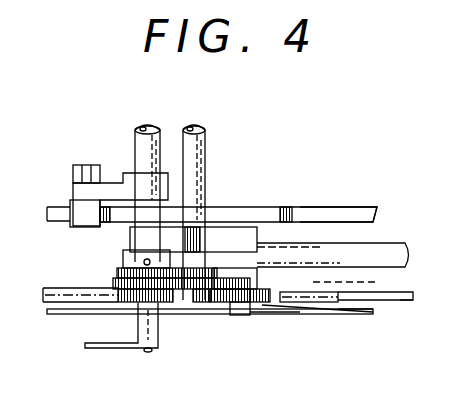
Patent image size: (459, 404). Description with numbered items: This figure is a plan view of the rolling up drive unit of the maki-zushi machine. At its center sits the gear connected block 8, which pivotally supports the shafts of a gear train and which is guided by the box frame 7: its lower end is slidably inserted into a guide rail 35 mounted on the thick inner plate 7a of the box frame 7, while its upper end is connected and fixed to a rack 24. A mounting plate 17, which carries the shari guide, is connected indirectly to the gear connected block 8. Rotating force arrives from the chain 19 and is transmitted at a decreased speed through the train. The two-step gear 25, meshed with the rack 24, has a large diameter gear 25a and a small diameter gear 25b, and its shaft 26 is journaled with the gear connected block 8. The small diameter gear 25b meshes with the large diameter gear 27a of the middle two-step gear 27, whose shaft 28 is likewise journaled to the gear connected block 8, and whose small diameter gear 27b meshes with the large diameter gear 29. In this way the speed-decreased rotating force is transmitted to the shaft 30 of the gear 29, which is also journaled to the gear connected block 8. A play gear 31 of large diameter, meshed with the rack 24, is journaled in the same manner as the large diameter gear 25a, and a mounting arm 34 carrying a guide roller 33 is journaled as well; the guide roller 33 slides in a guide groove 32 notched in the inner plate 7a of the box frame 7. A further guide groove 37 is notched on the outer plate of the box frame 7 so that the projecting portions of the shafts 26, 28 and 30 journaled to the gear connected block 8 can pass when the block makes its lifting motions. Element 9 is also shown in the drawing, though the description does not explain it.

The shaft 30 is at (143, 137).
The shaft 28 is at (200, 145).
The mounting arm 34 is at (75, 183).
The guide roller 33 is at (80, 222).
The large diameter gear 29 is at (122, 272).
The small diameter gear 27b is at (200, 303).
The gear connected block 8 is at (248, 231).
The guide groove 32 is at (310, 212).
The inner plate 7a is at (353, 210).
The guide rail 35 is at (397, 249).
The small diameter gear 25b is at (257, 279).
The rack 24 is at (326, 300).
The box frame 7 is at (368, 302).
The guide groove 37 is at (61, 314).
The gear of looseness or play 31 is at (115, 302).
The bracket 9 is at (120, 348).
The middle two-step gear 27 is at (174, 302).
The large diameter gear 27a is at (222, 316).
The mounting plate 17 is at (243, 319).
The shaft 26 is at (257, 314).
The two-step gear 25 is at (298, 312).
The large diameter gear 25a is at (326, 313).
The chain 19 is at (408, 300).